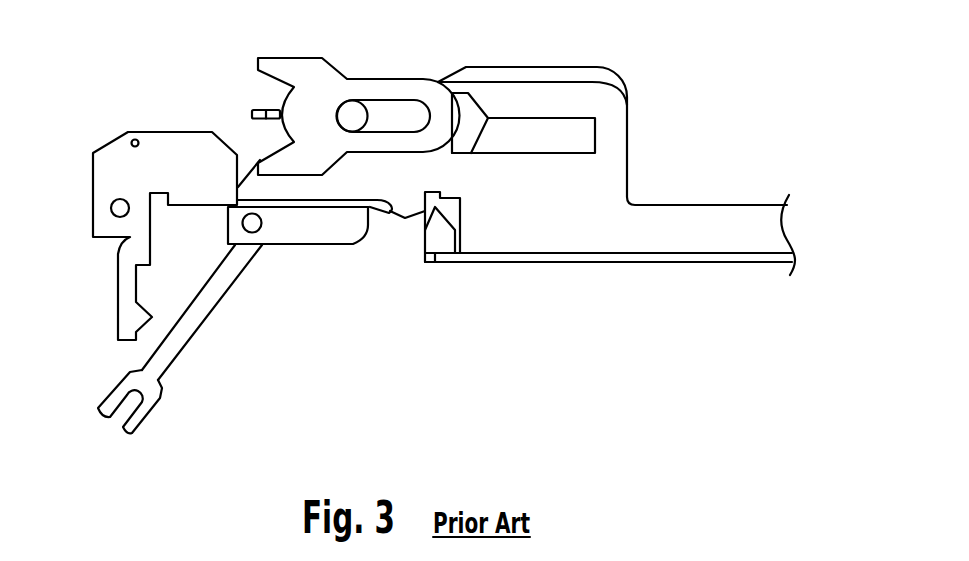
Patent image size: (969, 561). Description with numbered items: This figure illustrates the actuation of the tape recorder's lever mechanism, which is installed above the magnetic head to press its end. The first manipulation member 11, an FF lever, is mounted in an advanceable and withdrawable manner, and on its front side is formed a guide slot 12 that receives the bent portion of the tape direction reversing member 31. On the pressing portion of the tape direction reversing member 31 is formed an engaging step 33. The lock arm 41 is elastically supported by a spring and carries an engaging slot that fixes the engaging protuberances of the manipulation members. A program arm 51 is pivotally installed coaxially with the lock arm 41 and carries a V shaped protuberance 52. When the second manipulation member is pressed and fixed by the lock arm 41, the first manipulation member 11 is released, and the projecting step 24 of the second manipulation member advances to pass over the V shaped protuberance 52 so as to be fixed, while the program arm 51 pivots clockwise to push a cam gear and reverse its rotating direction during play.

The first manipulation member 11 is at (620, 167).
The guide slot 12 is at (477, 117).
The projecting step 24 is at (445, 245).
The tape direction reversing member 31 is at (404, 92).
The engaging step 33 is at (256, 112).
The lock arm 41 is at (123, 165).
The program arm 51 is at (313, 232).
The V shaped protuberance 52 is at (367, 218).